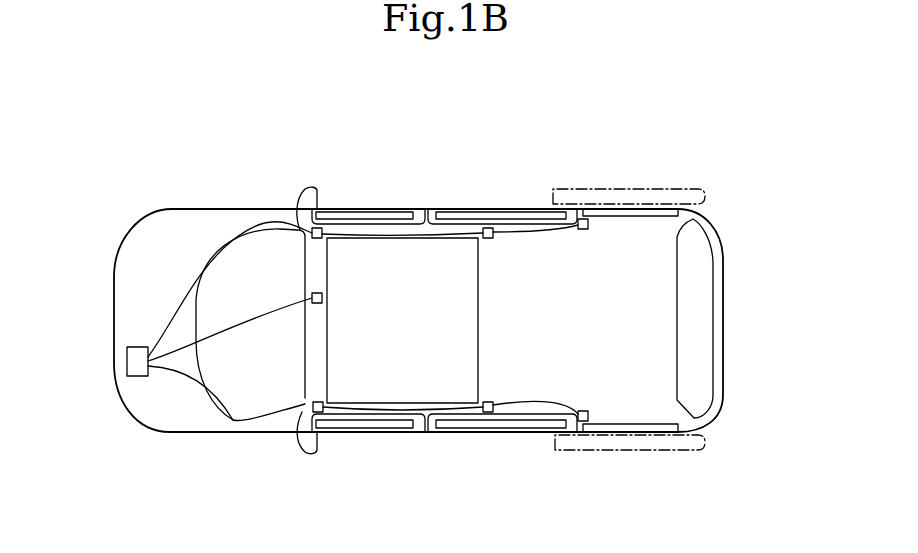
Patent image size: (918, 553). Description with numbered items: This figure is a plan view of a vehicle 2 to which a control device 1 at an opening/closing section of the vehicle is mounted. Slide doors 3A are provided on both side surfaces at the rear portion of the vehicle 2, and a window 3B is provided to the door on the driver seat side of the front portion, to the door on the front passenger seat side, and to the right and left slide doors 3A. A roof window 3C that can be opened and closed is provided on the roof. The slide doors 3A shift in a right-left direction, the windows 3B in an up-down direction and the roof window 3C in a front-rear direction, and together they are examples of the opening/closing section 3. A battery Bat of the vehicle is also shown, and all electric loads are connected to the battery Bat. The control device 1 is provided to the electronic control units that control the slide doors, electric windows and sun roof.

The control device 1 is at (314, 403).
The vehicle 2 is at (718, 240).
The opening/closing section 3 is at (508, 293).
The slide doors 3A is at (566, 312).
The window 3B is at (461, 208).
The roof window 3C is at (465, 258).
The battery Bat is at (127, 366).